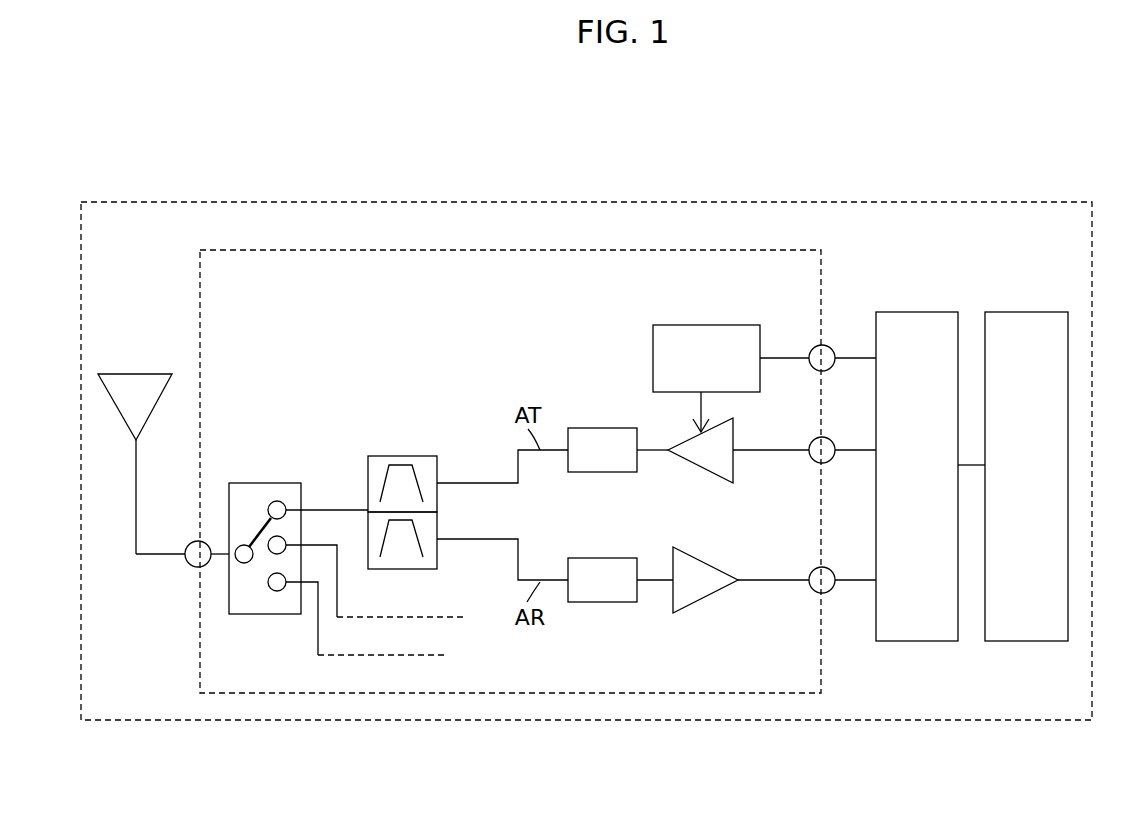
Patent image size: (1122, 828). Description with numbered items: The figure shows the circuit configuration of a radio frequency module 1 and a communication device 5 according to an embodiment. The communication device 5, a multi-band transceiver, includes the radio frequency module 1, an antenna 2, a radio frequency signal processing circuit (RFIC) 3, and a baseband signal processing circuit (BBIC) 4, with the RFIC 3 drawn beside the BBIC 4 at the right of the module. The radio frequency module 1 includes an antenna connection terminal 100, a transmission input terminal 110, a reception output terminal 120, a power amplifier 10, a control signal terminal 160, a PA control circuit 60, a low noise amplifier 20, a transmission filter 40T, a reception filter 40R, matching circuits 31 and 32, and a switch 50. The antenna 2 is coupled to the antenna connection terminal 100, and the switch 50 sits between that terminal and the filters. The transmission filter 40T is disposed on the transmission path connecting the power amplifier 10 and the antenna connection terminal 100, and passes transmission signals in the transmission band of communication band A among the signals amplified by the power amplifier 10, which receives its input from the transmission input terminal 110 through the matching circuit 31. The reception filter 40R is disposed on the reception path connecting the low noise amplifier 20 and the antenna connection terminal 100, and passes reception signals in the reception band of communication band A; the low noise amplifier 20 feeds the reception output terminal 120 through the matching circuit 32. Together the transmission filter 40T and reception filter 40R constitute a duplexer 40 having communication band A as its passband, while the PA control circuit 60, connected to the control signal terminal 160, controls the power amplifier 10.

The radio frequency module 1 is at (822, 262).
The antenna 2 is at (138, 374).
The radio frequency signal processing circuit 3 is at (912, 312).
The baseband signal processing circuit 4 is at (1015, 312).
The communication device 5 is at (1048, 202).
The power amplifier 10 is at (693, 463).
The low noise amplifier 20 is at (692, 603).
The matching circuit 31 is at (598, 428).
The matching circuit 32 is at (597, 602).
The duplexer 40 is at (468, 511).
The transmission filter 40T is at (400, 456).
The reception filter 40R is at (468, 558).
The switch 50 is at (263, 483).
The PA control circuit 60 is at (737, 325).
The antenna connection terminal 100 is at (187, 565).
The transmission input terminal 110 is at (813, 459).
The reception output terminal 120 is at (813, 589).
The control signal terminal 160 is at (813, 367).